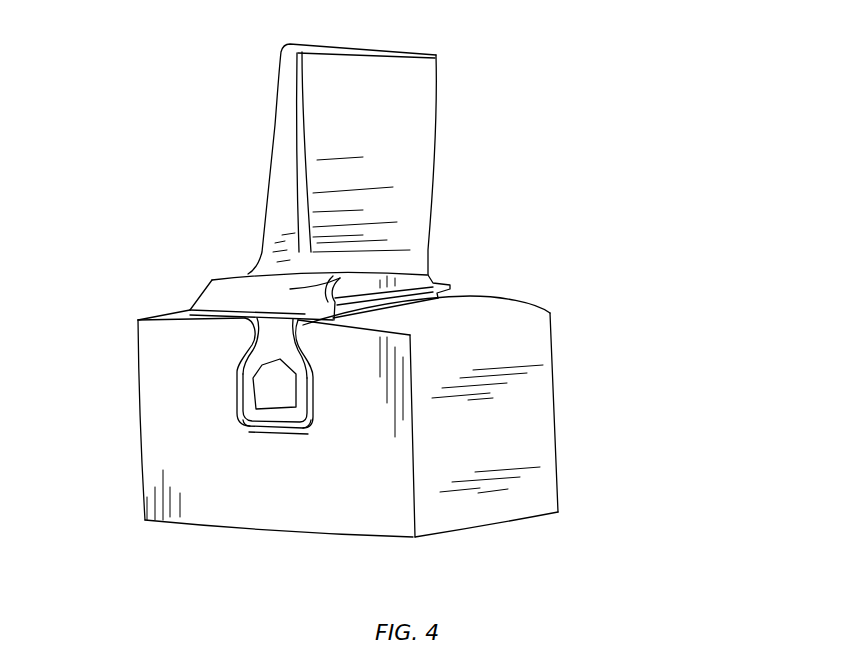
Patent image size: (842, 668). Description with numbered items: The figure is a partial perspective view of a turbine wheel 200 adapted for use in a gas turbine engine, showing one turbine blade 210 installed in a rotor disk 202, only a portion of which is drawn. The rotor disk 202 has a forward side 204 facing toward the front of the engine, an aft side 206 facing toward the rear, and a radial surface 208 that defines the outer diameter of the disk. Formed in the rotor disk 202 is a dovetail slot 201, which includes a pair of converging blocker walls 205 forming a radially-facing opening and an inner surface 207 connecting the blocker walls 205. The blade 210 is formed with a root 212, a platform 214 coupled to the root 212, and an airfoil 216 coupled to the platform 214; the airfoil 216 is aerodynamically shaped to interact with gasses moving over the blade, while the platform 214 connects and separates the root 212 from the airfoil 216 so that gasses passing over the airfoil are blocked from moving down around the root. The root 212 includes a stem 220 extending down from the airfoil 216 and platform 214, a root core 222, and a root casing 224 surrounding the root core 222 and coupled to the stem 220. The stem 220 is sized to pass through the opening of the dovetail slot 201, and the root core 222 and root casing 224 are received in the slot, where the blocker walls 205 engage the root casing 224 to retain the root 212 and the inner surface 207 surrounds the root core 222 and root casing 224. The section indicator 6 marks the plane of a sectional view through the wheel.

The turbine wheel 200 is at (688, 118).
The dovetail slot 201 is at (299, 446).
The rotor disk 202 is at (579, 339).
The forward side 204 is at (389, 528).
The blocker walls 205 is at (320, 346).
The aft side 206 is at (558, 494).
The inner surface 207 is at (263, 430).
The radial surface 208 is at (503, 312).
The turbine blade 210 is at (465, 160).
The root 212 is at (200, 333).
The platform 214 is at (208, 281).
The airfoil 216 is at (266, 156).
The stem 220 is at (276, 338).
The root core 222 is at (284, 385).
The root casing 224 is at (262, 414).
The section line 6- 6 is at (138, 392).